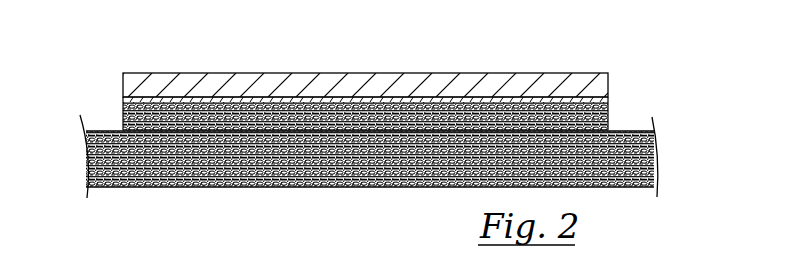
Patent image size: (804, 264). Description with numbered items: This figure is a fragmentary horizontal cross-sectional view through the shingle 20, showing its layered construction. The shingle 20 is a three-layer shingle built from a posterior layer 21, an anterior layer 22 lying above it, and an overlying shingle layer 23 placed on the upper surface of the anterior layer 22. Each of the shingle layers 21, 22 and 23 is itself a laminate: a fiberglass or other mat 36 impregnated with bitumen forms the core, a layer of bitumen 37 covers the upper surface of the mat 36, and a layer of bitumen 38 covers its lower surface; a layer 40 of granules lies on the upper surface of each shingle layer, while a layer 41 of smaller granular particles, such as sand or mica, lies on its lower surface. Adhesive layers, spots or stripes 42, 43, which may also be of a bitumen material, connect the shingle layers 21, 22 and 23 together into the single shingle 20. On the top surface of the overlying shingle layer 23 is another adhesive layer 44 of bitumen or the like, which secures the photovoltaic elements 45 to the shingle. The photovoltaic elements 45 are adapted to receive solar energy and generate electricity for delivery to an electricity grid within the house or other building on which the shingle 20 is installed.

The shingle 20 is at (389, 138).
The posterior layer 21 is at (430, 186).
The anterior layer 22 is at (636, 131).
The overlying shingle layer 23 is at (608, 116).
The mat 36 is at (655, 176).
The layer of bitumen 37 is at (657, 172).
The layer of bitumen 38 is at (655, 178).
The layer of granules 40 is at (660, 160).
The layer of smaller granular particles 41 is at (640, 188).
The adhesive layer 42 is at (86, 158).
The adhesive layer 43 is at (123, 128).
The adhesive layer 44 is at (123, 98).
The photovoltaic elements 45 is at (263, 80).